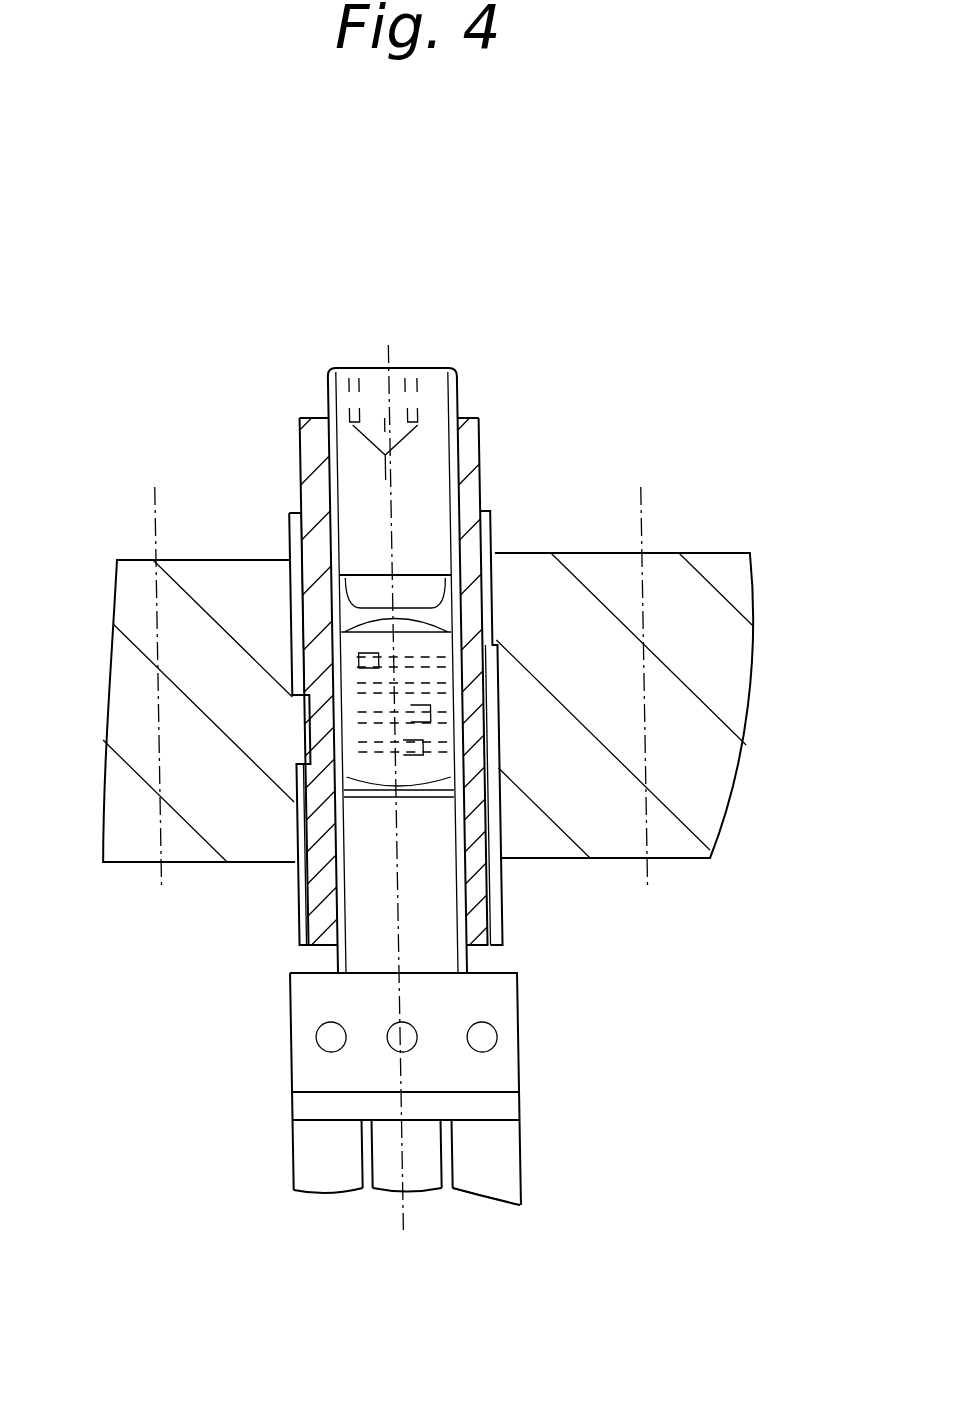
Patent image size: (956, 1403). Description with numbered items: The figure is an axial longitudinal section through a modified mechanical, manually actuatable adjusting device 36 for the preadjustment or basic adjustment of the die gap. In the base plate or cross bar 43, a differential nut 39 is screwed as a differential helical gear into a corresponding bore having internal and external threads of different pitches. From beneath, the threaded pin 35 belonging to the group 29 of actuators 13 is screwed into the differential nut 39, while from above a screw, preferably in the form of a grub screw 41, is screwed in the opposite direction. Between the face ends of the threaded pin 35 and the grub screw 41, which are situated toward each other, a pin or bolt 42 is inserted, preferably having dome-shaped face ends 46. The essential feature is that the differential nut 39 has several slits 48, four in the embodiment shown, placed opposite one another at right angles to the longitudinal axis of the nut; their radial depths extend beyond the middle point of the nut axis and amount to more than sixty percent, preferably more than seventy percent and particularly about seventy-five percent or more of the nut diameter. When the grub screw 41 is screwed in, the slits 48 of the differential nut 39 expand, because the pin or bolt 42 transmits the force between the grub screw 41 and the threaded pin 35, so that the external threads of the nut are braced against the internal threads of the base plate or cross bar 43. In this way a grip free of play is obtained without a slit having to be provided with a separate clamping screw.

The actuator 13 is at (493, 1163).
The group of actuators 29 is at (560, 1068).
The threaded pin 35 is at (448, 908).
The adjusting device 36 is at (507, 392).
The differential nut 39 is at (468, 482).
The grub screw 41 is at (452, 385).
The pin or bolt 42 is at (440, 772).
The base plate or cross bar 43 is at (688, 575).
The dome-shaped face ends 46 is at (432, 622).
The slits 48 is at (365, 680).